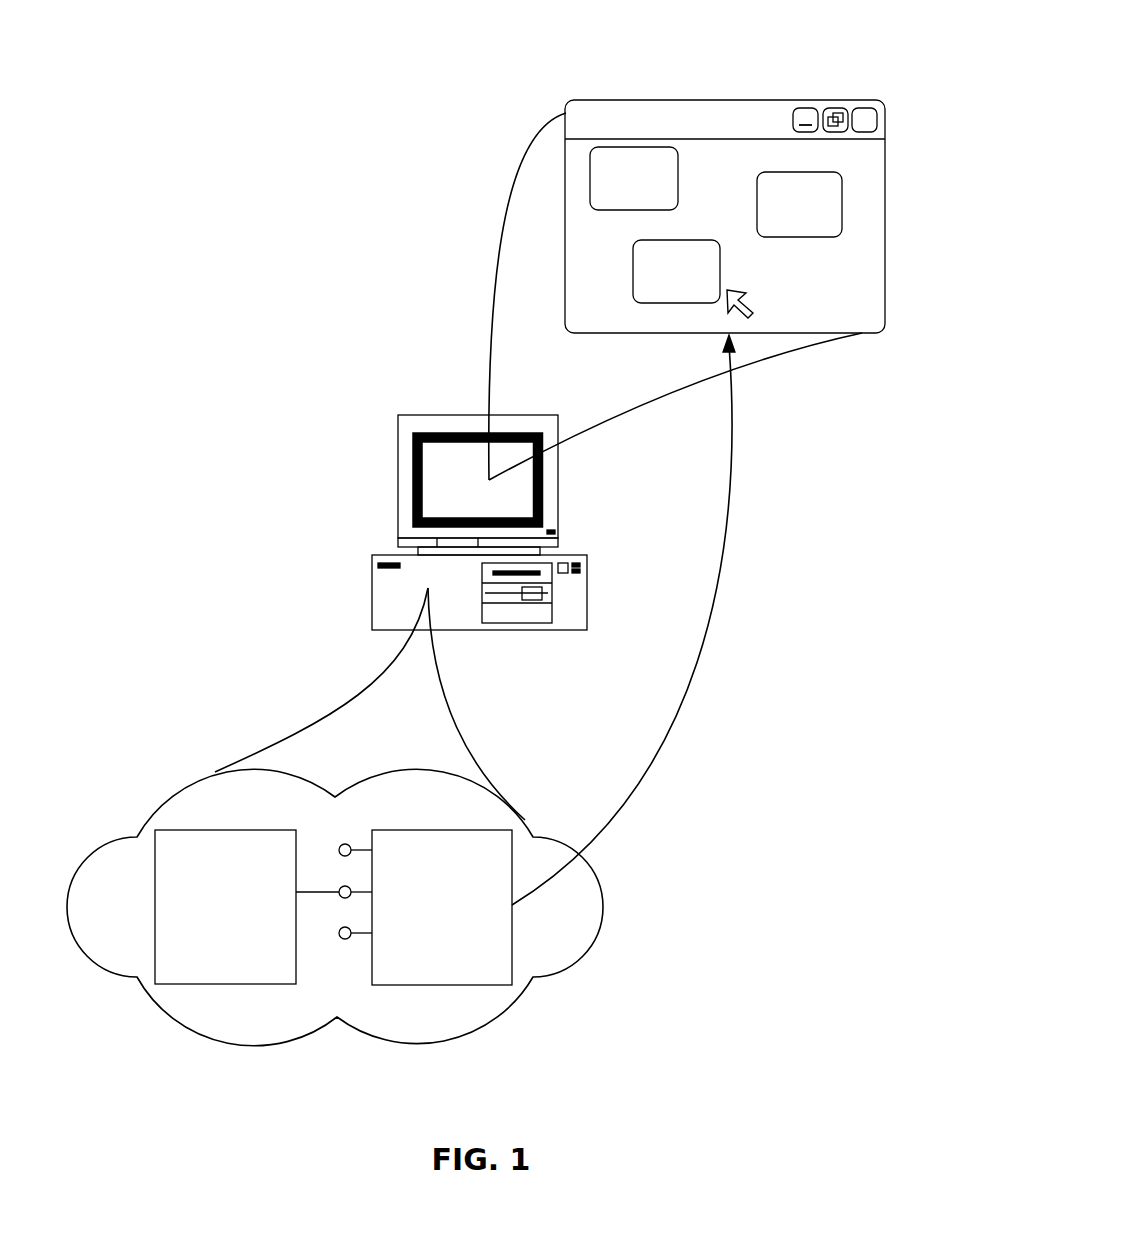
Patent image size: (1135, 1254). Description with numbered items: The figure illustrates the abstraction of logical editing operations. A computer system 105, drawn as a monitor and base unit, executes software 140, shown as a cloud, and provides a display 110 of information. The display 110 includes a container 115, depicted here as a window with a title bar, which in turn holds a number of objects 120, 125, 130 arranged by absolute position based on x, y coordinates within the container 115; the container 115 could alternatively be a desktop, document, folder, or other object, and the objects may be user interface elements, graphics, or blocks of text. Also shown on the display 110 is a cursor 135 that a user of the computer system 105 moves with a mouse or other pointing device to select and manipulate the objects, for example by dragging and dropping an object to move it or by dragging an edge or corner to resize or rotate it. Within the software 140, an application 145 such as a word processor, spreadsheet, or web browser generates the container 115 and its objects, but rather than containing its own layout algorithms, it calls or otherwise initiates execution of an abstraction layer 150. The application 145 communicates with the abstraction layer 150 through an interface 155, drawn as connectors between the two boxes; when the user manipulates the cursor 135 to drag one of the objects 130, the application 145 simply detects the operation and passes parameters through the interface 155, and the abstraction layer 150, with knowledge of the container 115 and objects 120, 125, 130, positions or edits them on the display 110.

The computer system 105 is at (587, 577).
The display 110 is at (729, 62).
The container 115 is at (873, 197).
The object 120 is at (668, 188).
The object 125 is at (828, 208).
The object 130 is at (672, 252).
The cursor 135 is at (747, 303).
The software 140 is at (607, 932).
The application 145 is at (288, 965).
The abstraction layer 150 is at (498, 963).
The interface 155 is at (343, 897).